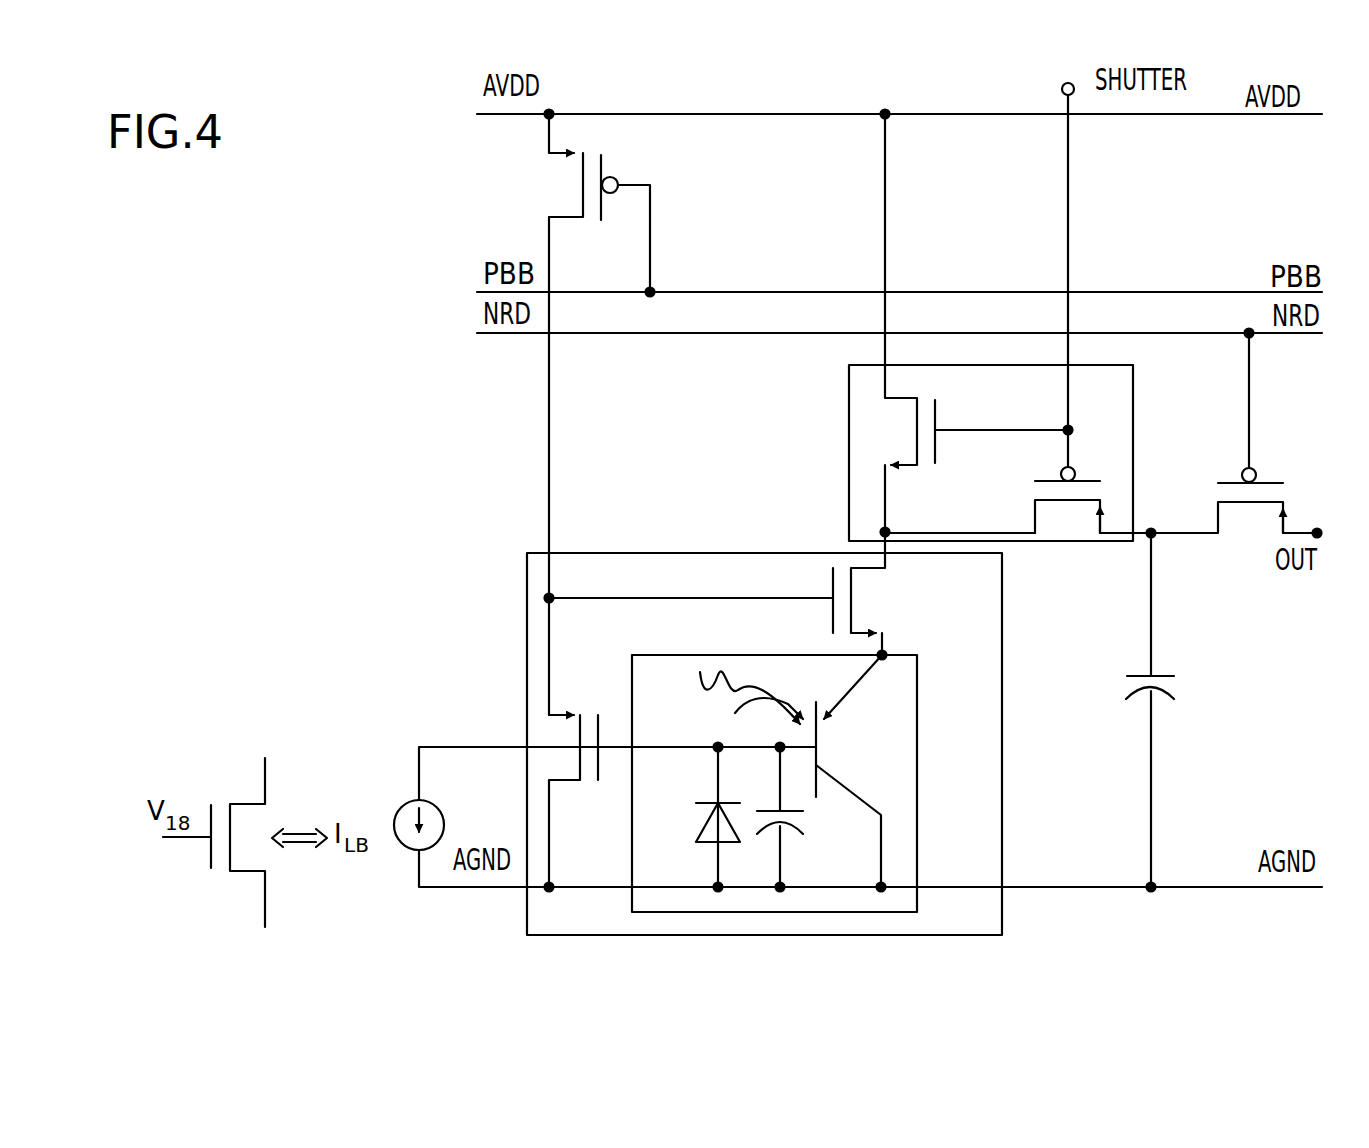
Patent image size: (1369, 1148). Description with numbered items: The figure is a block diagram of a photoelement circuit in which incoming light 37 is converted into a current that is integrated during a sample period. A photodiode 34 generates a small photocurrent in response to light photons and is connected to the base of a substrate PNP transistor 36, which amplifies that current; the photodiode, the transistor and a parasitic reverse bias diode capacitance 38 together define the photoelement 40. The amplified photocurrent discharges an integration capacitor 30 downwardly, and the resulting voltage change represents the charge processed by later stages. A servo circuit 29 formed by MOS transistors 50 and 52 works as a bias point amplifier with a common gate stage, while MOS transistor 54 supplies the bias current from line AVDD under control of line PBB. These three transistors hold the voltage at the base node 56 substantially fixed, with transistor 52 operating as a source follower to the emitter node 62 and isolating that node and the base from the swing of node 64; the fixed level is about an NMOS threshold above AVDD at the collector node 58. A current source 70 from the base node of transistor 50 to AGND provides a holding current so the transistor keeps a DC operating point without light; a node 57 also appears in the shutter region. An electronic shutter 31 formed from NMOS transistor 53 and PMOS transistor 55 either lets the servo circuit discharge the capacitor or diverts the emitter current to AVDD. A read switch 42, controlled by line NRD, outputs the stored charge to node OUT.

The servo circuit 29 is at (727, 552).
The integration capacitor 30 is at (1135, 672).
The electronic shutter 31 is at (1133, 447).
The photodiode 34 is at (705, 846).
The PNP transistor 36 is at (818, 704).
The incoming light 37 is at (751, 705).
The parasitic capacitance 38 is at (783, 850).
The photoelement 40 is at (777, 655).
The read switch 42 is at (1268, 482).
The MOS transistor 50 is at (598, 715).
The MOS transistor 52 is at (831, 578).
The NMOS transistor 53 is at (937, 407).
The MOS transistor 54 is at (603, 157).
The PMOS transistor 55 is at (1058, 478).
The base node 56 is at (675, 747).
The node 57 is at (887, 505).
The collector node 58 is at (553, 866).
The emitter node 62 is at (884, 645).
The node 64 is at (1152, 540).
The current source 70 is at (438, 807).